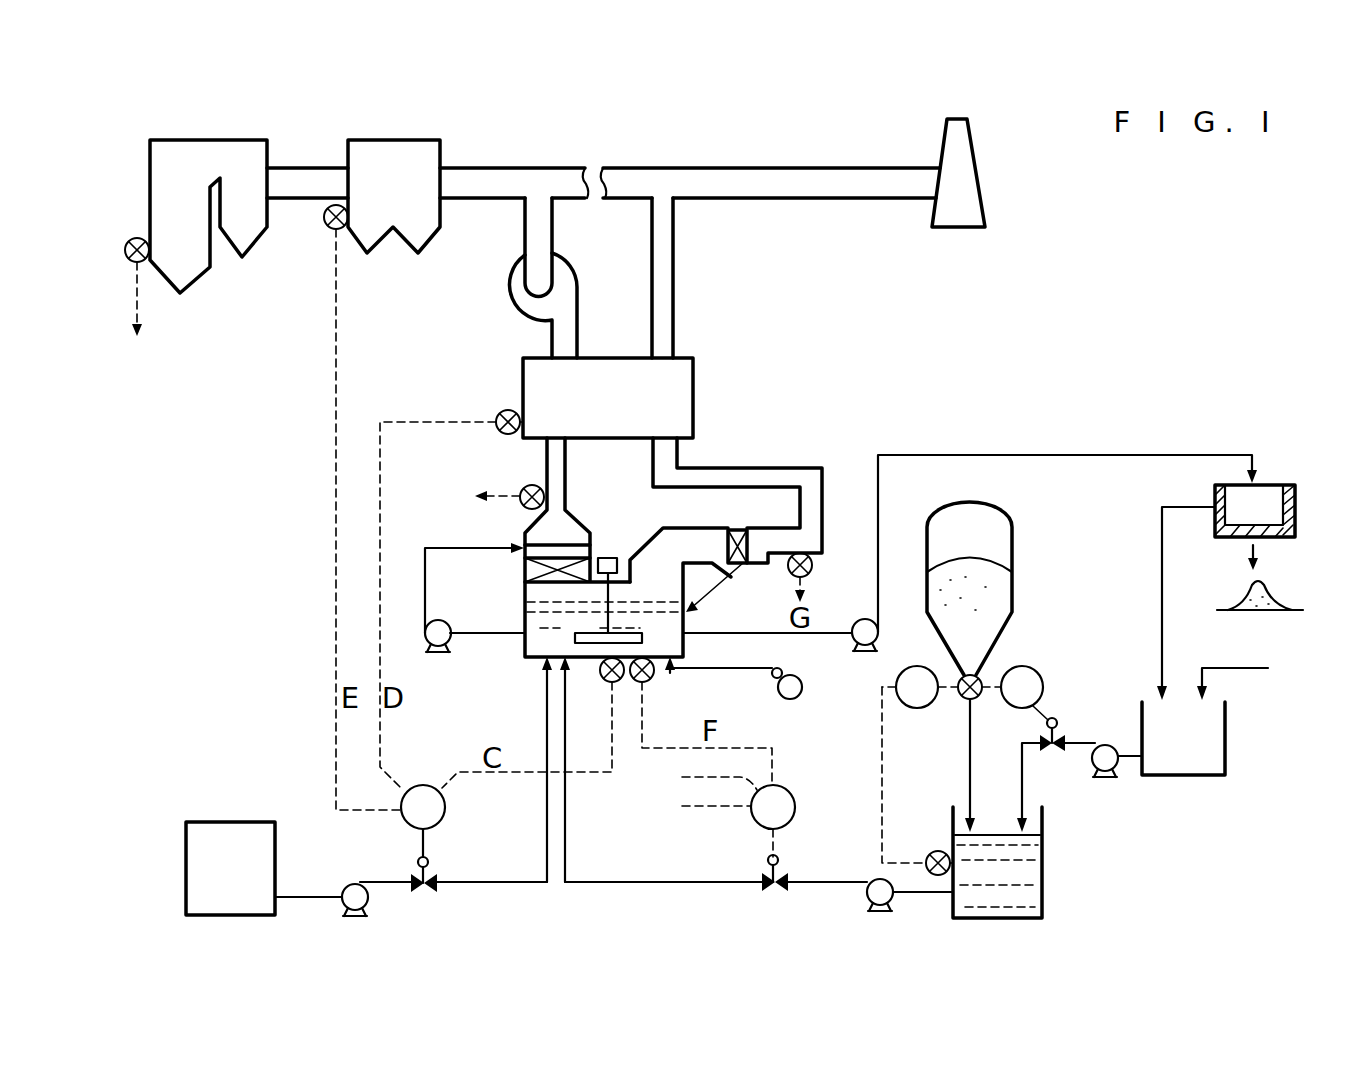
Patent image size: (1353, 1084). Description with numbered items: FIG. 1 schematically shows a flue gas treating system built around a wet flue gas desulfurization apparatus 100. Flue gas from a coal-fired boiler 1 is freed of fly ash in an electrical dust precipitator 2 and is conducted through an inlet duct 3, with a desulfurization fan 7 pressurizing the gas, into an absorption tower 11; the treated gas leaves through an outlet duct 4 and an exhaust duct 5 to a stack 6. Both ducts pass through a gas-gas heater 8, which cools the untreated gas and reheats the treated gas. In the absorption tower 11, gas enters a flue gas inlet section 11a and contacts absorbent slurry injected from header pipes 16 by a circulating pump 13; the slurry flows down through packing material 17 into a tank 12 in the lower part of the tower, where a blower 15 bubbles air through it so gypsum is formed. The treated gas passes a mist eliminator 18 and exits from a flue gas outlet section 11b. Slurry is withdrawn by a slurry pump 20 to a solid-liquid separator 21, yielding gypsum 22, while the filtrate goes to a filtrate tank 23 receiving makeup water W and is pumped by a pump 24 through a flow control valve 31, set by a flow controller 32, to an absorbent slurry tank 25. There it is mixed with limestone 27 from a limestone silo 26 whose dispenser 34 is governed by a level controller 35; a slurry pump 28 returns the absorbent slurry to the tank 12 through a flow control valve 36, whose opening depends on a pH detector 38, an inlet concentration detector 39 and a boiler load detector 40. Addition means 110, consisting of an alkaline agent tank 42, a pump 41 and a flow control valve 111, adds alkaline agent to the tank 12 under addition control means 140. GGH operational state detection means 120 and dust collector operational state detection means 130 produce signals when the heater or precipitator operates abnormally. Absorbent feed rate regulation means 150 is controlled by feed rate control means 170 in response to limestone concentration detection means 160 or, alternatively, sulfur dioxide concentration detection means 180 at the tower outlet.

The coal-fired boiler 1 is at (232, 140).
The electrical dust precipitator 2 is at (418, 140).
The inlet duct 3 is at (523, 236).
The outlet duct 4 is at (673, 258).
The exhaust duct 5 is at (726, 168).
The stack 6 is at (970, 138).
The desulfurization fan 7 is at (508, 304).
The gas-gas heater 8 is at (522, 375).
The absorption tower 11 is at (525, 590).
The flue gas inlet section 11a is at (524, 528).
The flue gas outlet section 11b is at (718, 527).
The tank 12 is at (524, 648).
The circulating pump 13 is at (425, 632).
The blower 15 is at (801, 698).
The header pipes 16 is at (563, 545).
The packing material 17 is at (525, 572).
The mist eliminator 18 is at (745, 545).
The slurry pump 20 is at (862, 620).
The solid-liquid separator 21 is at (1290, 485).
The gypsum 22 is at (1275, 602).
The filtrate tank 23 is at (1226, 735).
The pump 24 is at (1105, 742).
The absorbent slurry tank 25 is at (1043, 866).
The limestone silo 26 is at (1012, 592).
The limestone 27 is at (990, 560).
The slurry pump 28 is at (874, 879).
The flow control valve 31 is at (1056, 718).
The flow controller 32 is at (1033, 668).
The dispenser 34 is at (960, 700).
The level controller 35 is at (896, 685).
The flow control valve 36 is at (762, 860).
The pH detector 38 is at (603, 682).
The inlet concentration detector 39 is at (525, 487).
The boiler load detector 40 is at (130, 240).
The pump 41 is at (346, 886).
The alkaline agent tank 42 is at (268, 822).
The wet flue gas desulfurization apparatus 100 is at (1040, 328).
The addition means 110 is at (233, 767).
The flow control valve 111 is at (418, 860).
The GGH operational state detection means 120 is at (500, 412).
The dust collector operational state detection means 130 is at (326, 229).
The addition control means 140 is at (418, 785).
The absorbent feed rate regulation means 150 is at (786, 856).
The limestone concentration detection means 160 is at (656, 682).
The feed rate control means 170 is at (792, 786).
The sulfur dioxide concentration detection means 180 is at (729, 591).